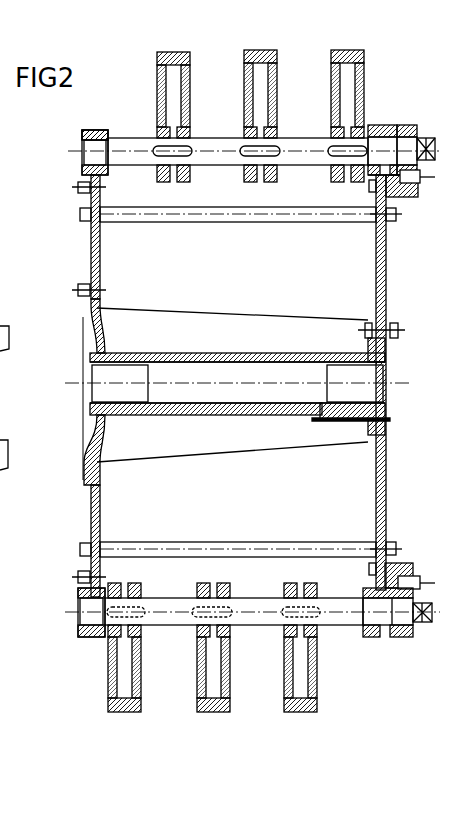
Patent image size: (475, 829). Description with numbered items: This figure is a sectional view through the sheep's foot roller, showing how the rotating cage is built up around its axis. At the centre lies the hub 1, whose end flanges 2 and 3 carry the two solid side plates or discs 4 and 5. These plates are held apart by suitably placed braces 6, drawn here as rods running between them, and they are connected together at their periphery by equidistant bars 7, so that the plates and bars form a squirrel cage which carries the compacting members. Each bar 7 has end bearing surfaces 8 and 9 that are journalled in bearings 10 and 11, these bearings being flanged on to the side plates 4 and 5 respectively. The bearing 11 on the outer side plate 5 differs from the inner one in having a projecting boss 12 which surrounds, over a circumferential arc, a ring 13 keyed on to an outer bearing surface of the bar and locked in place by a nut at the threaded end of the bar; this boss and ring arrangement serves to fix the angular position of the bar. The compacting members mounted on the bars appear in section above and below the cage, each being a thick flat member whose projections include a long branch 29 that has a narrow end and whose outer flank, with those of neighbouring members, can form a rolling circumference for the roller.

The hub 1 is at (228, 355).
The end flange 2 is at (103, 344).
The end flange 3 is at (365, 331).
The side plate 4 is at (91, 253).
The side plate 5 is at (386, 263).
The brace 6 is at (302, 214).
The bar 7 is at (234, 150).
The end bearing surface 8 is at (88, 149).
The end bearing surface 9 is at (378, 146).
The bearing 10 is at (84, 131).
The bearing 11 is at (392, 128).
The projecting boss 12 is at (418, 187).
The ring 13 is at (418, 125).
The long branch 29 is at (243, 59).